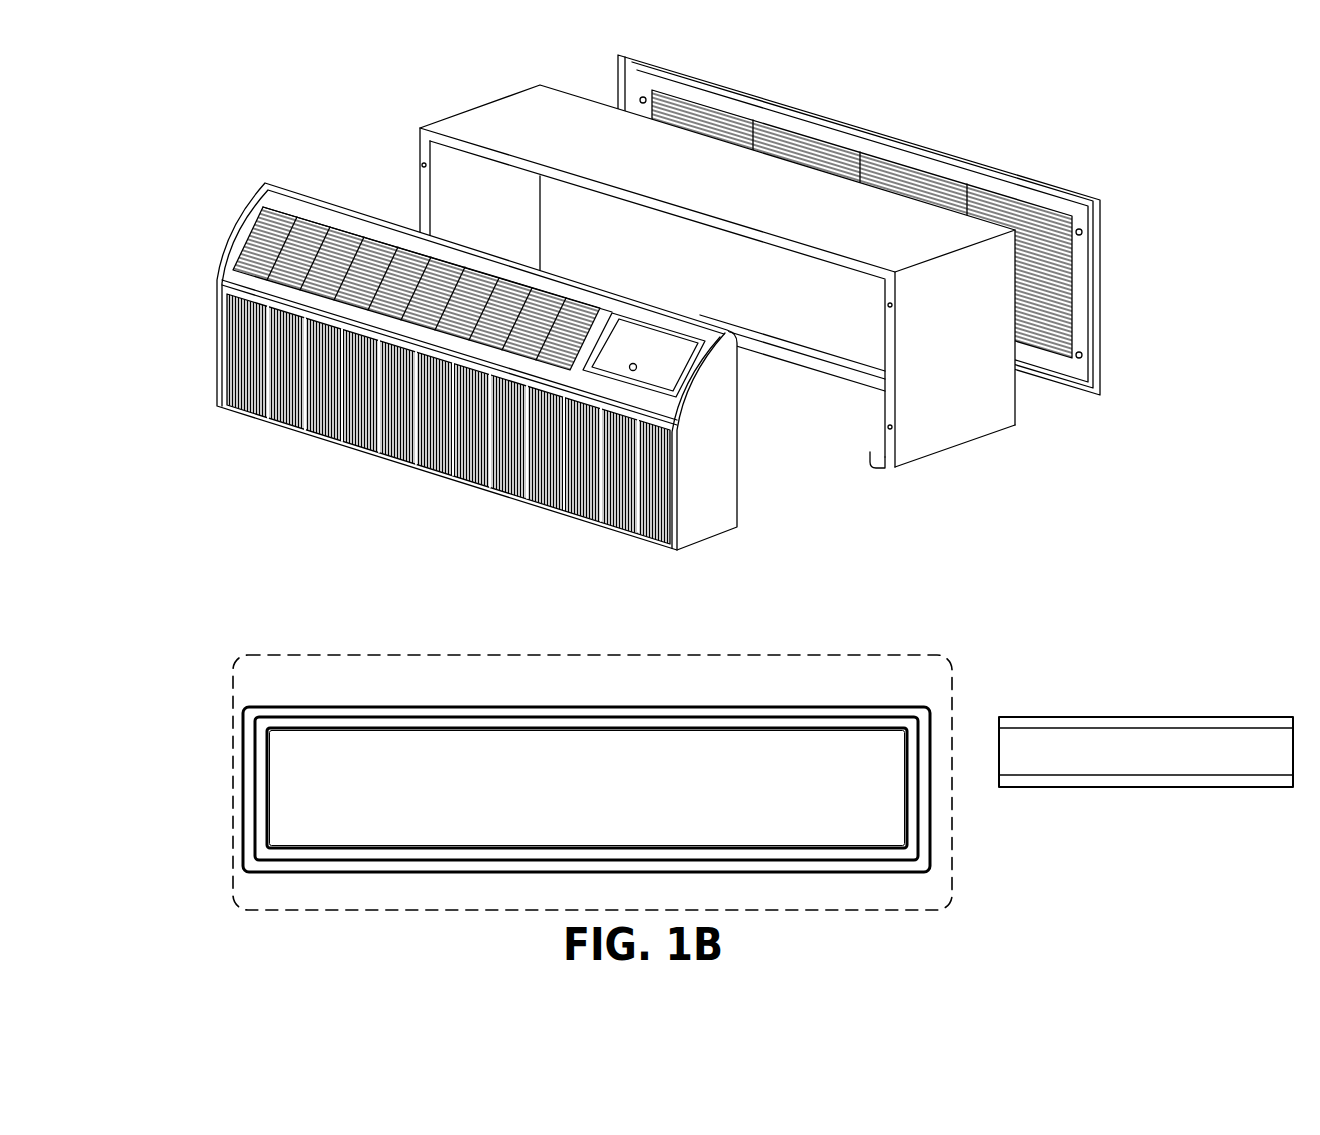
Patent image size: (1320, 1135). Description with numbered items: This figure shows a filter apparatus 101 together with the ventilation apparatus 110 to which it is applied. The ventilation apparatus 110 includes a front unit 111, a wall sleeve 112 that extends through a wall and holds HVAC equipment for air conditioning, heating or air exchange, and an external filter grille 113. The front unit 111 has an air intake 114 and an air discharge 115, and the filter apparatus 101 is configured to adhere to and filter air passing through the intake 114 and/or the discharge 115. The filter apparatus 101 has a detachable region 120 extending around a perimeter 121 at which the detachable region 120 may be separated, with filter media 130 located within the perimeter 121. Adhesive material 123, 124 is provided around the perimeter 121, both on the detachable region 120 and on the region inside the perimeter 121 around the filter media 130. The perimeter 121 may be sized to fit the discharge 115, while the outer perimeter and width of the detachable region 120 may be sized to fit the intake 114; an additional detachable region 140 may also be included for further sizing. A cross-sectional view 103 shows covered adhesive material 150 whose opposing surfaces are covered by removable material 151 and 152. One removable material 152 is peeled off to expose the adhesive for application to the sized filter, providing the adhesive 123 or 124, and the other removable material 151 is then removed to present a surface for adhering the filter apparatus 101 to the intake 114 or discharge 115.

The ventilation apparatus 110 is at (1106, 67).
The front unit 111 is at (701, 537).
The wall sleeve 112 is at (938, 451).
The external filter grille 113 is at (1088, 396).
The air intake 114 is at (365, 437).
The air discharge 115 is at (272, 246).
The filter apparatus 101 is at (957, 606).
The additional detachable region 140 is at (692, 656).
The detachable region 120 is at (629, 706).
The perimeter 121 is at (725, 716).
The adhesive material 123 is at (808, 709).
The adhesive material 124 is at (870, 720).
The filter media 130 is at (594, 791).
The cross-sectional view 103 is at (1191, 661).
The adhesive material 150 is at (1146, 752).
The removable material 151 is at (1093, 722).
The removable material 152 is at (1092, 782).